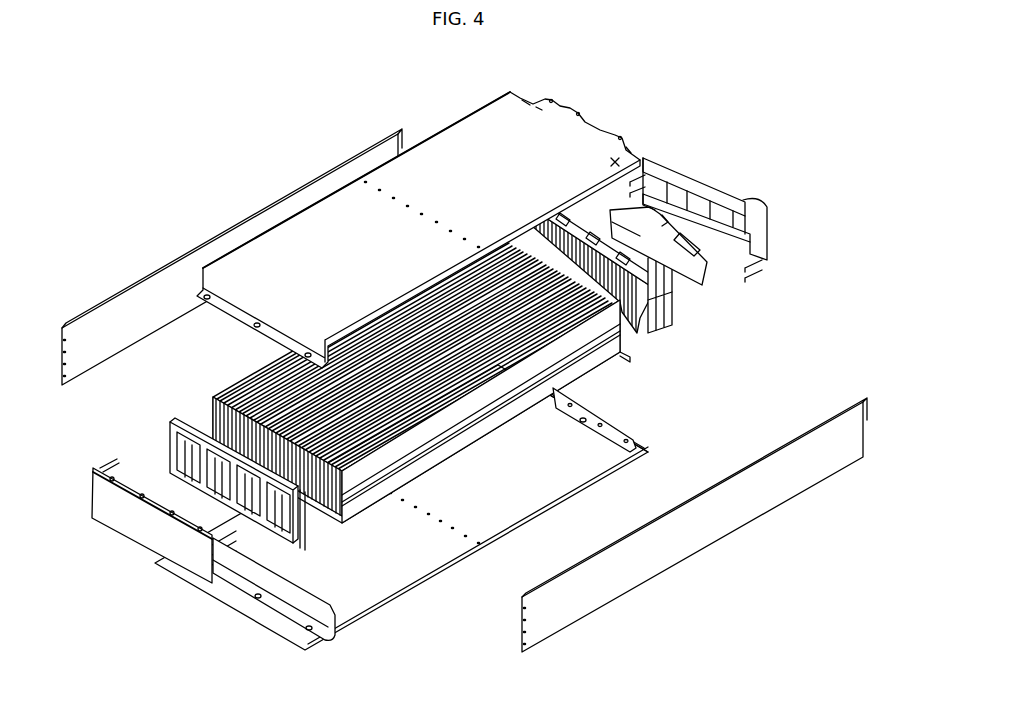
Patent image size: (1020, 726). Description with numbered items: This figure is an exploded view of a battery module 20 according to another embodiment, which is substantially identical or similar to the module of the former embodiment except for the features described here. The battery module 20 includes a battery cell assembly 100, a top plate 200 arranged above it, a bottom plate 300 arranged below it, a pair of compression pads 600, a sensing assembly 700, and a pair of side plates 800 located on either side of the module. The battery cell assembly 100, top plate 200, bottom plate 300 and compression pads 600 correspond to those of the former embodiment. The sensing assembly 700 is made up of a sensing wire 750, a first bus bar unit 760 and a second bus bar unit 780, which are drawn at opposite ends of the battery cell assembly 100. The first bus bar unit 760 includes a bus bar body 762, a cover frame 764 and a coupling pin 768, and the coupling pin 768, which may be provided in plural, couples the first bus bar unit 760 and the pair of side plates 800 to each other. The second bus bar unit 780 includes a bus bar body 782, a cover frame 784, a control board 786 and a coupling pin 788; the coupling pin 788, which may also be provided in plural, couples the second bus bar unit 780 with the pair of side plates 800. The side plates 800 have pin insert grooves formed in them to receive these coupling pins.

The battery module 20 is at (200, 136).
The battery cell assembly 100 is at (205, 388).
The top plate 200 is at (485, 118).
The bottom plate 300 is at (370, 618).
The compression pad 600 is at (582, 368).
The sensing assembly 700 is at (128, 557).
The sensing wire 750 is at (314, 628).
The first bus bar unit 760 is at (103, 462).
The bus bar body 762 is at (276, 545).
The cover frame 764 is at (183, 568).
The coupling pin 768 is at (232, 560).
The second bus bar unit 780 is at (727, 212).
The bus bar body 782 is at (672, 315).
The cover frame 784 is at (772, 248).
The control board 786 is at (712, 270).
The coupling pin 788 is at (762, 272).
The side plate 800 is at (125, 298).